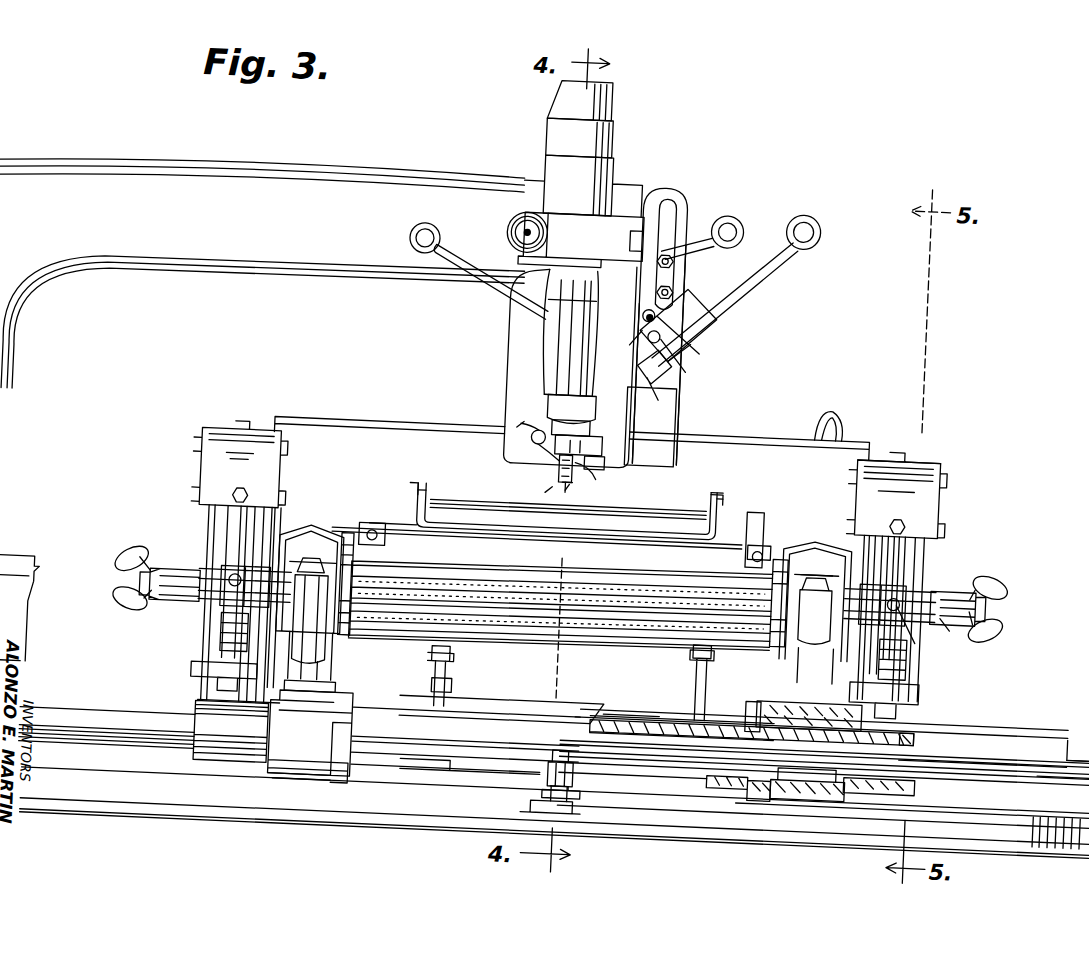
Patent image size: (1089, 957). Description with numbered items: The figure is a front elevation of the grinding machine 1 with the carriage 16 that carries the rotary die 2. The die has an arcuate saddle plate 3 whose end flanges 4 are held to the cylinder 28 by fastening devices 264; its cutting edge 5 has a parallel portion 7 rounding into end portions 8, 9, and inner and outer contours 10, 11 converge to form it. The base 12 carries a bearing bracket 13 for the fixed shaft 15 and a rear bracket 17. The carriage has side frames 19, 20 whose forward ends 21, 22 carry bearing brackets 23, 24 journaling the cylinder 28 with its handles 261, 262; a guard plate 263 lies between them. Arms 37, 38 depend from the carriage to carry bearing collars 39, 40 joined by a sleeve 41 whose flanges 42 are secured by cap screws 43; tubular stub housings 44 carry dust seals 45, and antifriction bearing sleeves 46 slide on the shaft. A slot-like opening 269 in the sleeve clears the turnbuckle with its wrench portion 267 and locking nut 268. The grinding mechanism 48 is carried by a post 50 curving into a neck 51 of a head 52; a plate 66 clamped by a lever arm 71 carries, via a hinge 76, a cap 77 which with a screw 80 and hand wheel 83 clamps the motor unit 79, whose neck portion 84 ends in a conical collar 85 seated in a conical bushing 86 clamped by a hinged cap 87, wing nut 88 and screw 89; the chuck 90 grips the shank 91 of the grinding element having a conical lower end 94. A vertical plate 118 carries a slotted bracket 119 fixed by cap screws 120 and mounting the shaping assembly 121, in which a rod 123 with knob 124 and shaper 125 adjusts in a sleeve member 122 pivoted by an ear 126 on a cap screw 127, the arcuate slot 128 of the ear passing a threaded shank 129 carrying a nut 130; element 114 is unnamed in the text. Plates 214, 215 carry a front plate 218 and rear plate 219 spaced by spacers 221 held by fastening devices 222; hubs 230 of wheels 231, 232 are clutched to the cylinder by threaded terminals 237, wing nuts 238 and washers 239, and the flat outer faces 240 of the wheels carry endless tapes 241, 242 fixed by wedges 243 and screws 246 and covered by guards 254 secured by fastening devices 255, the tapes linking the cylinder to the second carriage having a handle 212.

The grinding machine 1 is at (960, 449).
The rotary die 2 is at (758, 509).
The saddle plate 3 is at (621, 563).
The end flanges 4 is at (771, 535).
The cutting edge 5 is at (411, 488).
The cutting edge portion 7 is at (544, 533).
The end cutting edge portion 8 is at (724, 488).
The end cutting edge portion 9 is at (427, 496).
The inner contour 10 is at (714, 486).
The outer contour 11 is at (729, 483).
The base 12 is at (266, 826).
The bearing bracket 13 is at (1088, 726).
The fixed shaft 15 is at (1013, 732).
The carriage 16 is at (348, 655).
The bracket 17 is at (608, 710).
The side frame 19 is at (797, 668).
The side frame 20 is at (350, 677).
The forward end 21 is at (803, 682).
The forward end 22 is at (345, 692).
The bearing bracket 23 is at (779, 602).
The bearing bracket 24 is at (337, 605).
The cylinder 28 is at (490, 636).
The arm 37 is at (868, 677).
The arm 38 is at (323, 708).
The bearing collar 39 is at (312, 797).
The bearing collar 40 is at (821, 788).
The sleeve 41 is at (700, 700).
The flanges 42 is at (355, 795).
The cap screws 43 is at (432, 693).
The tubular stub housings 44 is at (242, 789).
The dust seals 45 is at (932, 724).
The antifriction bearing sleeves 46 is at (786, 790).
The grinding mechanism 48 is at (533, 375).
The post 50 is at (2, 440).
The neck 51 is at (244, 186).
The head 52 is at (504, 322).
The plate 66 is at (508, 278).
The lever arm 71 is at (473, 289).
The hinge 76 is at (598, 218).
The cap 77 is at (576, 202).
The motor unit 79 is at (590, 130).
The screw 80 is at (497, 230).
The hand wheel 83 is at (505, 220).
The neck portion 84 is at (541, 344).
The conical collar 85 is at (545, 412).
The conical bushing 86 is at (550, 426).
The hinged cap 87 is at (590, 464).
The wing nut 88 is at (519, 442).
The screw 89 is at (556, 466).
The chuck 90 is at (586, 480).
The shank 91 is at (536, 495).
The conical lower end 94 is at (556, 494).
The lever knob 114 is at (720, 220).
The vertical plate 118 is at (678, 266).
The slotted bracket 119 is at (663, 195).
The cap screws 120 is at (662, 253).
The shaping assembly 121 is at (718, 323).
The sleeve member 122 is at (685, 342).
The rod 123 is at (741, 287).
The knob 124 is at (811, 219).
The shaper 125 is at (631, 356).
The ear 126 is at (642, 334).
The cap screw 127 is at (676, 366).
The arcuate slot 128 is at (638, 316).
The threaded shank 129 is at (637, 306).
The nut 130 is at (667, 285).
The handle 212 is at (827, 400).
The plate 214 is at (865, 548).
The plate 215 is at (283, 533).
The front plate 218 is at (934, 539).
The rear plate 219 is at (208, 545).
The spacers 221 is at (218, 686).
The fastening devices 222 is at (200, 678).
The hubs 230 is at (236, 588).
The wheel 231 is at (919, 646).
The wheel 232 is at (236, 648).
The threaded terminals 237 is at (145, 596).
The wing nuts 238 is at (128, 617).
The washers 239 is at (150, 585).
The flat outer faces 240 is at (209, 528).
The endless tape 241 is at (911, 553).
The endless tape 242 is at (229, 543).
The wedges 243 is at (941, 631).
The screws 246 is at (242, 596).
The guards 254 is at (238, 435).
The fastening devices 255 is at (232, 509).
The handle 261 is at (455, 684).
The handle 262 is at (709, 668).
The guard plate 263 is at (381, 430).
The fastening devices 264 is at (378, 531).
The wrench portion 267 is at (575, 796).
The nut 268 is at (553, 811).
The slot-like opening 269 is at (466, 764).